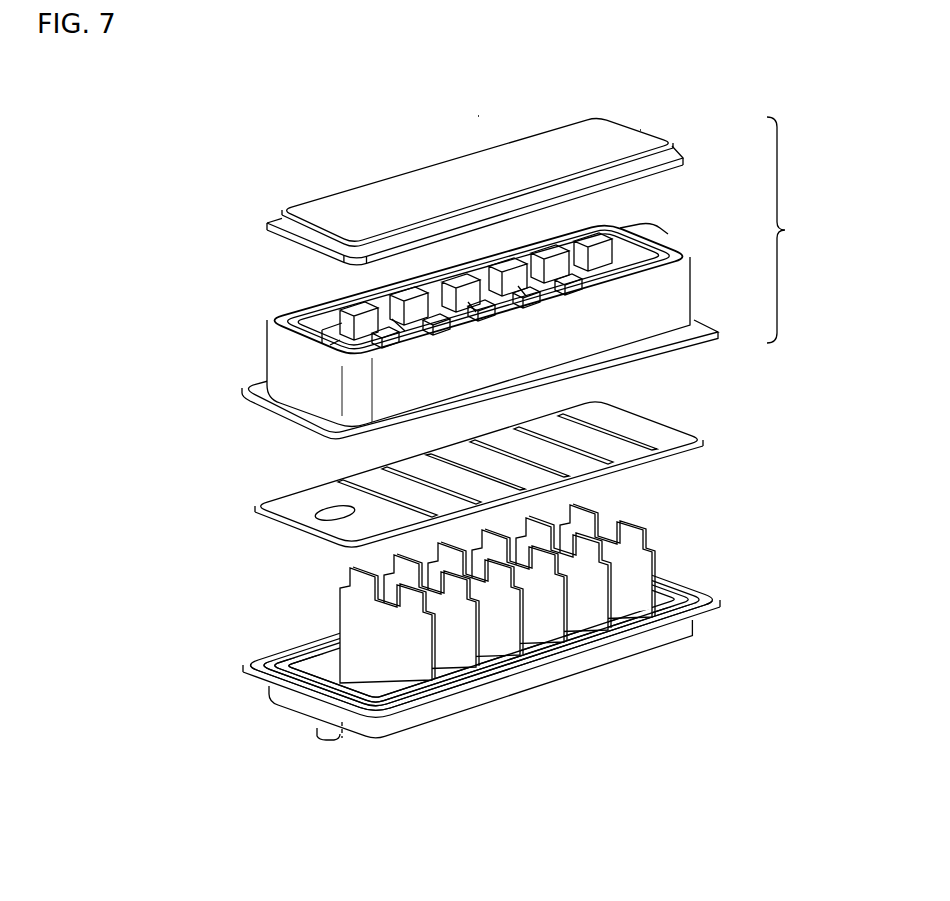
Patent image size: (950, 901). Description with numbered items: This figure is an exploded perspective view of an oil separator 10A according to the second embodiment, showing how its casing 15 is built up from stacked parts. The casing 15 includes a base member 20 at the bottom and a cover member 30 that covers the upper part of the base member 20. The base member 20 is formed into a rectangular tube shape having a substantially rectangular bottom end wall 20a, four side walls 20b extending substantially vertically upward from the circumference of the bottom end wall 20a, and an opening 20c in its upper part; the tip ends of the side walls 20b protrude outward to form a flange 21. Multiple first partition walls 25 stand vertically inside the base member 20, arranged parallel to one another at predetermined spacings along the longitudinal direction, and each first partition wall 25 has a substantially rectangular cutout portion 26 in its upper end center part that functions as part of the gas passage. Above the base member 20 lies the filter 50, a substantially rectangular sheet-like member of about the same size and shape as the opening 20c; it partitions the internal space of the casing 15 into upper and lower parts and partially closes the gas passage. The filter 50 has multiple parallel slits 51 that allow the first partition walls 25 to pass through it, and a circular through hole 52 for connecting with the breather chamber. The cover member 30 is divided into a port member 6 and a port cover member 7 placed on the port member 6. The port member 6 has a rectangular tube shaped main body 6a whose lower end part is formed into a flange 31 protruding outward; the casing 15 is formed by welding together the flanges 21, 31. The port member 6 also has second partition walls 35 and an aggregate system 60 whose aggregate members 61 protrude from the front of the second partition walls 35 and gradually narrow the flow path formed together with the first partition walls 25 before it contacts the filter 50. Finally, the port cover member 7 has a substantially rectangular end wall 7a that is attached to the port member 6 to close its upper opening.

The port cover member 7 is at (456, 179).
The end wall 7a is at (470, 162).
The oil separator 10A is at (373, 124).
The casing 15 is at (664, 114).
The cover member 30 is at (795, 230).
The port member 6 is at (453, 325).
The main body 6a is at (672, 297).
The aggregate member 61 is at (372, 330).
The aggregate system 60 is at (491, 315).
The second partition wall 35 is at (482, 315).
The flange 31 is at (258, 397).
The filter 50 is at (522, 459).
The slit 51 is at (470, 474).
The through hole 52 is at (325, 507).
The base member 20 is at (459, 655).
The bottom end wall 20a is at (350, 692).
The side wall 20b is at (435, 708).
The opening 20c is at (247, 647).
The flange 21 is at (459, 654).
The first partition wall 25 is at (462, 626).
The cutout portion 26 is at (402, 582).